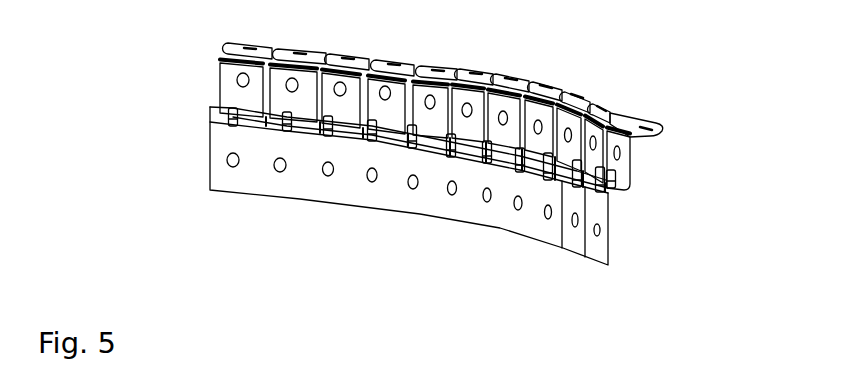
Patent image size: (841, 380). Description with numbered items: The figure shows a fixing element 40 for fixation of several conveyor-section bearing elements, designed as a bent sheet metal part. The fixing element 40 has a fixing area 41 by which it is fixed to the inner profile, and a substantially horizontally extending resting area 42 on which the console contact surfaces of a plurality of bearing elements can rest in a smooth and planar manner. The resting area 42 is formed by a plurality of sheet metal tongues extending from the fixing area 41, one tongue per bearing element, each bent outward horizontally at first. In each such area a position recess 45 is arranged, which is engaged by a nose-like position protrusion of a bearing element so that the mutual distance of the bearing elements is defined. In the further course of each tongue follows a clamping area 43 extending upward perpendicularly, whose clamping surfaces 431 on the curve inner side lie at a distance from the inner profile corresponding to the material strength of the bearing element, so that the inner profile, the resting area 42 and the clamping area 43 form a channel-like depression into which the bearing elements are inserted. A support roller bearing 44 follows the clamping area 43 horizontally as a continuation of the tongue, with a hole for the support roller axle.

The fixing element 40 is at (258, 215).
The fixing area 41 is at (613, 237).
The resting area 42 is at (613, 200).
The clamping area 43 is at (637, 162).
The clamping surfaces 431 is at (225, 73).
The support roller bearing 44 is at (652, 141).
The position recesses 45 is at (281, 140).